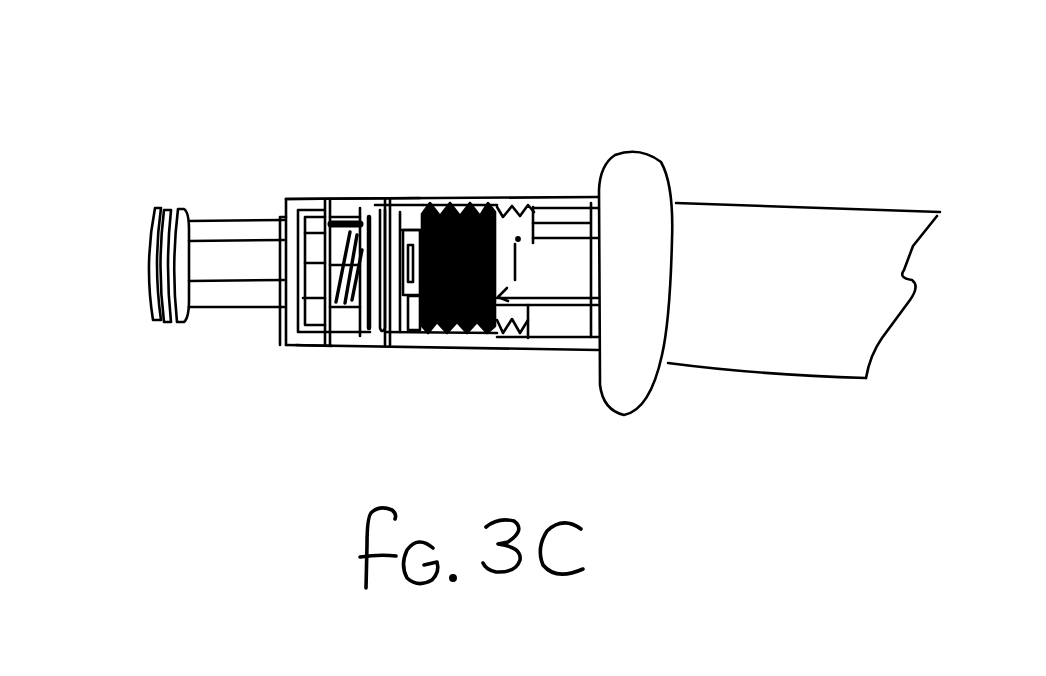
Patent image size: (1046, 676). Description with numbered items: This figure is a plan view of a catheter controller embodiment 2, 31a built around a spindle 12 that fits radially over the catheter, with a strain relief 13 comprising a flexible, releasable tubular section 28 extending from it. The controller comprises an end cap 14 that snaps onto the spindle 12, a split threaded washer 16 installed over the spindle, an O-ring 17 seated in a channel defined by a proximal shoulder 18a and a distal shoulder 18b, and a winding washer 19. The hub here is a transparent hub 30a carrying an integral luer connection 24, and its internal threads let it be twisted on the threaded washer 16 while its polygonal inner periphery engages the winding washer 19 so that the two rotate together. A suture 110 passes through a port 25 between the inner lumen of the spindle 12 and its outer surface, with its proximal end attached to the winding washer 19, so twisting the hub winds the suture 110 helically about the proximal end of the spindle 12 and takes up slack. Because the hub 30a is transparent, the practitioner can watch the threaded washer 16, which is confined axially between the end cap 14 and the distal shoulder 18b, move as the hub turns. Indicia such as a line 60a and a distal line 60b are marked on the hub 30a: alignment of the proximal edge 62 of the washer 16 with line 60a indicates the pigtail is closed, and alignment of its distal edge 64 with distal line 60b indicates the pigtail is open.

The housing end wall 2 is at (313, 347).
The spindle 12 is at (577, 280).
The strain relief 13 is at (830, 303).
The end cap 14 is at (562, 227).
The threaded washer 16 is at (498, 197).
The O-ring 17 is at (387, 198).
The proximal shoulder 18a is at (366, 333).
The distal shoulder 18b is at (414, 333).
The winding washer 19 is at (303, 297).
The luer connection 24 is at (168, 208).
The port 25 is at (357, 198).
The tubular section 28 is at (642, 172).
The transparent hub 30a is at (438, 196).
The assembly 31a is at (305, 148).
The line 60a is at (410, 198).
The distal line 60b is at (520, 258).
The proximal edge 62 is at (418, 333).
The distal edge 64 is at (598, 291).
The suture 110 is at (327, 198).